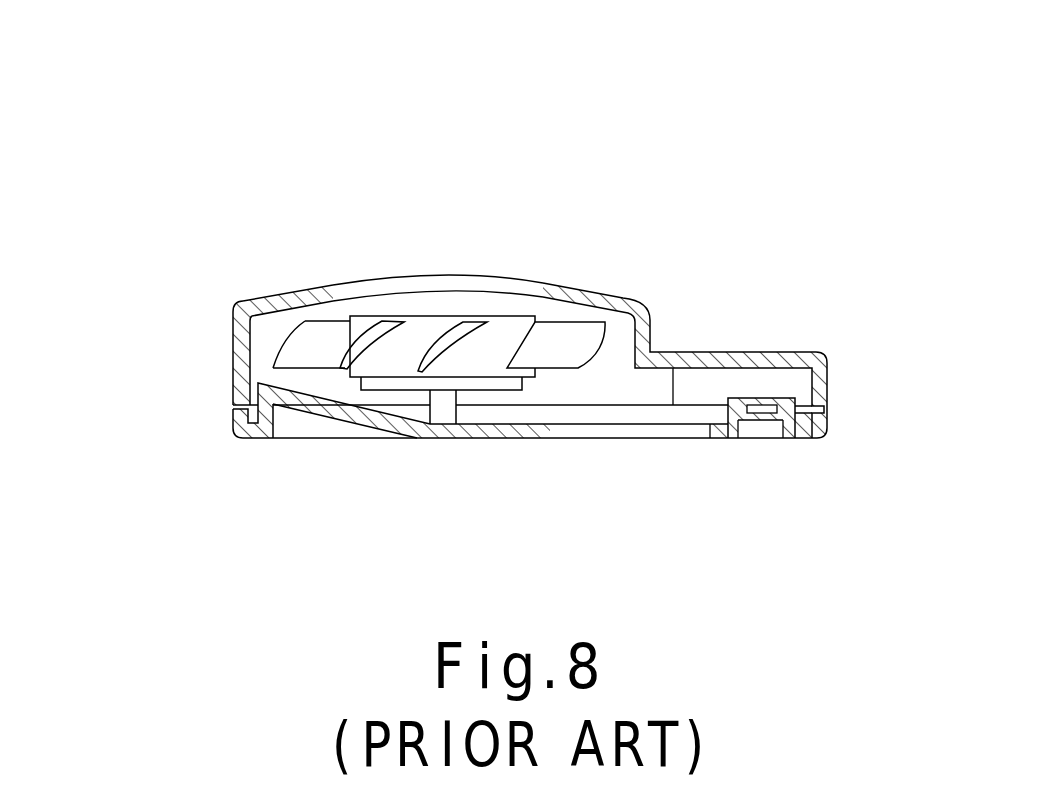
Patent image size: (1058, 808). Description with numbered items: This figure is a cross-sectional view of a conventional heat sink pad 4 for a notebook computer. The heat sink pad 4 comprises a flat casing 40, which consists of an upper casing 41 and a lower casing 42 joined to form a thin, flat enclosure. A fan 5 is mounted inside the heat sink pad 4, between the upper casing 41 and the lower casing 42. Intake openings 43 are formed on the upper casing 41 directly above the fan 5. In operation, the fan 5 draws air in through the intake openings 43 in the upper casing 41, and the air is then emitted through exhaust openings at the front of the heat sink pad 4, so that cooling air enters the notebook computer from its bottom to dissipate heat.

The heat sink pad 4 is at (812, 135).
The flat casing 40 is at (233, 344).
The upper casing 41 is at (310, 288).
The lower casing 42 is at (252, 435).
The intake openings 43 is at (442, 282).
The fan 5 is at (490, 367).